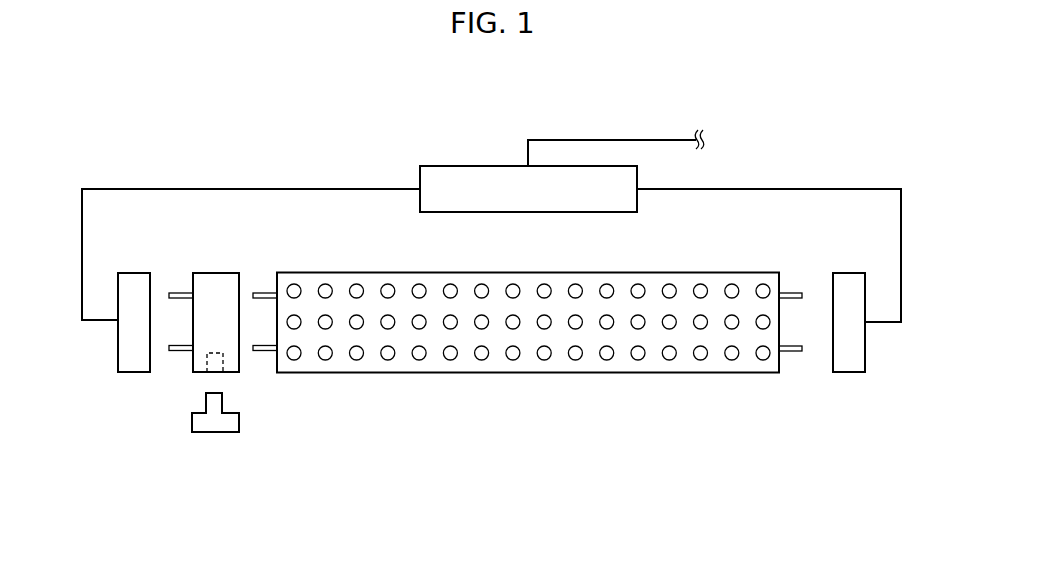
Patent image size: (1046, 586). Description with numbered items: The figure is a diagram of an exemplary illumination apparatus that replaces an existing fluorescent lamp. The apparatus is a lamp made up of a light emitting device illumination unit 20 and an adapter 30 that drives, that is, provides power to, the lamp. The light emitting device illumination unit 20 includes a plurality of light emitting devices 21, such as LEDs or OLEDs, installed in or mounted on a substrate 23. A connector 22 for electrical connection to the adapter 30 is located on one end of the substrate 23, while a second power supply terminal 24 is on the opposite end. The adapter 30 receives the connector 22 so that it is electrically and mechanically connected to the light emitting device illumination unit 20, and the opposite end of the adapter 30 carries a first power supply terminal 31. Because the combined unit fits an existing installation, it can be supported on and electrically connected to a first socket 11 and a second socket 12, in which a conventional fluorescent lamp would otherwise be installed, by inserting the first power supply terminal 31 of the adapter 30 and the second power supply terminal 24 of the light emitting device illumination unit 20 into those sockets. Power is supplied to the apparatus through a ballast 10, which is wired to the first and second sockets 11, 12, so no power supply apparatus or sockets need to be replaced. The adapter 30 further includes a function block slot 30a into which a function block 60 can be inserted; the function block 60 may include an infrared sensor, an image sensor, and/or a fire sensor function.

The ballast 10 is at (482, 166).
The first socket 11 is at (123, 372).
The second socket 12 is at (853, 372).
The light emitting device illumination unit 20 is at (467, 378).
The light emitting device 21 is at (543, 360).
The connector 22 is at (266, 351).
The substrate 23 is at (604, 360).
The second power supply terminal 24 is at (792, 351).
The adapter 30 is at (223, 265).
The function block slot 30a is at (207, 362).
The first power supply terminal 31 is at (179, 293).
The function block 60 is at (219, 437).